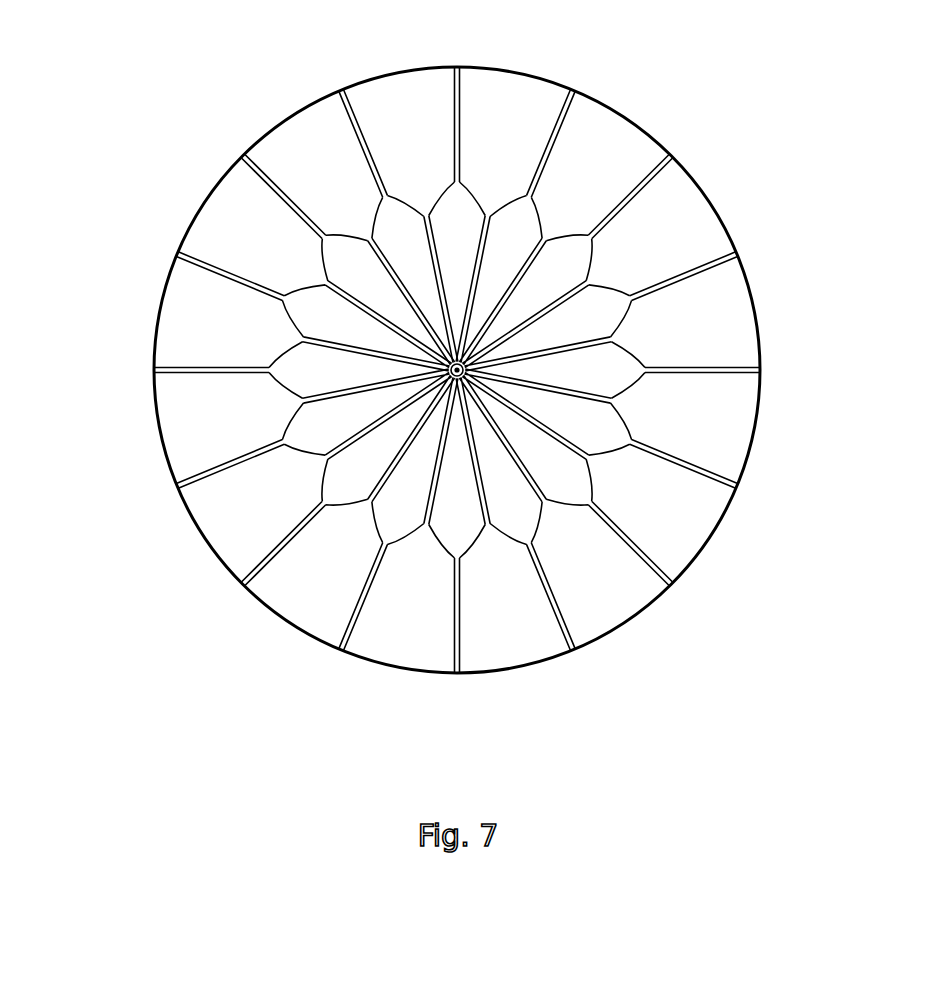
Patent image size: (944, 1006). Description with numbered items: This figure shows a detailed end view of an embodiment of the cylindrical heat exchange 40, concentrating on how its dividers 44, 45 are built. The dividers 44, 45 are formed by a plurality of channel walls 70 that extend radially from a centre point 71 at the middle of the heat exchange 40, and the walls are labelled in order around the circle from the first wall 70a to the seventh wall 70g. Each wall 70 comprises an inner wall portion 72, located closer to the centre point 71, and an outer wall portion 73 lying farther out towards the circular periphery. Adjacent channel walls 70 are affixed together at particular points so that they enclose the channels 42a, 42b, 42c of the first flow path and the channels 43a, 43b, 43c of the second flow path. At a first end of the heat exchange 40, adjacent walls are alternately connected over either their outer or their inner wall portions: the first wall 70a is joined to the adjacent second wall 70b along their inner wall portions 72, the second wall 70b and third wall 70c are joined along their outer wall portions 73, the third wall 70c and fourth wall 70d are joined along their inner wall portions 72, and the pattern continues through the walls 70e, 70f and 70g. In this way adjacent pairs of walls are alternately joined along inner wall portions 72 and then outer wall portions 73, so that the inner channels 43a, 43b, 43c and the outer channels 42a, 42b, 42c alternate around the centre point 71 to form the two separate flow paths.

The heat exchange 40 is at (113, 239).
The channel 42a is at (557, 188).
The channel 42b is at (626, 258).
The channel 42c is at (652, 340).
The channel 43a is at (533, 283).
The channel 43b is at (557, 332).
The channel 43c is at (565, 387).
The dividers 44 is at (452, 123).
The dividers 45 is at (438, 260).
The channel walls 70 is at (328, 108).
The first wall 70a is at (567, 124).
The second wall 70b is at (637, 182).
The third wall 70c is at (655, 180).
The fourth wall 70d is at (692, 262).
The channel wall 70e is at (708, 273).
The channel wall 70f is at (727, 367).
The channel wall 70g is at (712, 374).
The centre point 71 is at (435, 525).
The inner wall portion 72 is at (403, 272).
The outer wall portion 73 is at (353, 138).